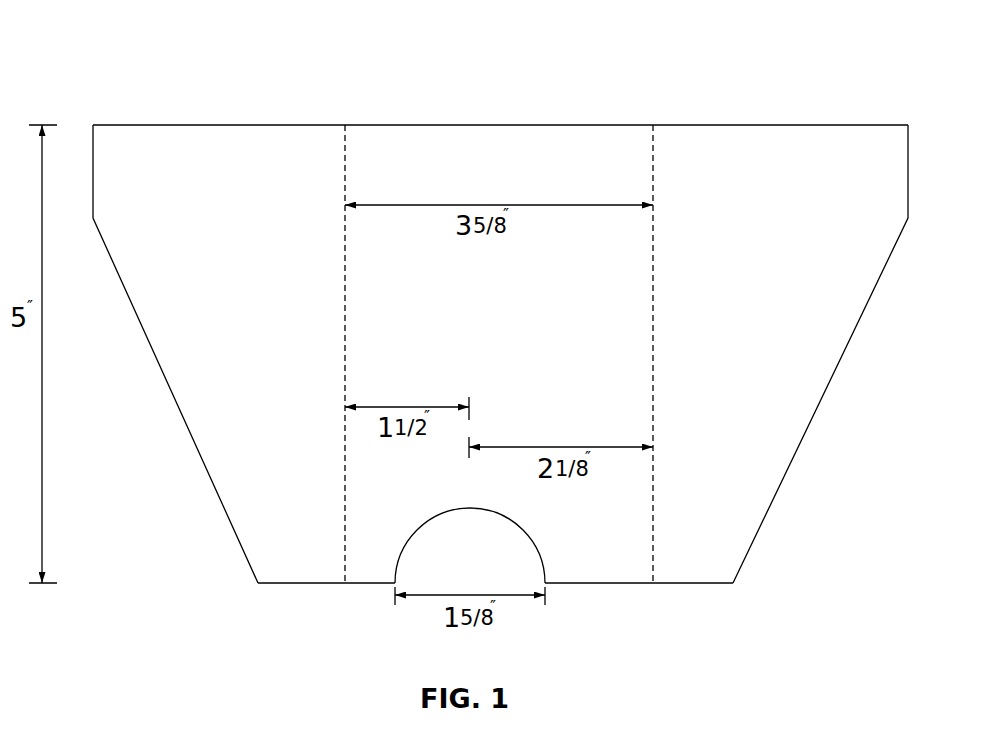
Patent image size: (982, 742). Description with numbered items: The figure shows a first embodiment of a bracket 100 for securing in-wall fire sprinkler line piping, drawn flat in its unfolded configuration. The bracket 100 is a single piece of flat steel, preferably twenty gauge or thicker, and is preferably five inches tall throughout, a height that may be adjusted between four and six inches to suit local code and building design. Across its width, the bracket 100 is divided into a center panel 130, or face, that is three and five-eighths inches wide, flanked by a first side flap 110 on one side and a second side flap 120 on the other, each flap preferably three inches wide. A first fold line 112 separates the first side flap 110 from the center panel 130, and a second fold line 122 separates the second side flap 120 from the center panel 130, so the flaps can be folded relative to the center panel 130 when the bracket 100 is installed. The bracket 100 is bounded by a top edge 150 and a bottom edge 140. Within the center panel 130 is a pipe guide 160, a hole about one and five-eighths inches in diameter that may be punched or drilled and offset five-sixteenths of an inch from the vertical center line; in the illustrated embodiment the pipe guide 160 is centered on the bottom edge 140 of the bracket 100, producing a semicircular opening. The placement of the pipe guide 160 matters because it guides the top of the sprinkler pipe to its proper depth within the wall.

The bracket 100 is at (145, 62).
The first side flap 110 is at (196, 445).
The first fold line 112 is at (345, 558).
The second side flap 120 is at (815, 375).
The second fold line 122 is at (653, 558).
The center panel 130 is at (587, 178).
The bottom edge 140 is at (615, 585).
The top edge 150 is at (502, 125).
The pipe guide 160 is at (485, 508).